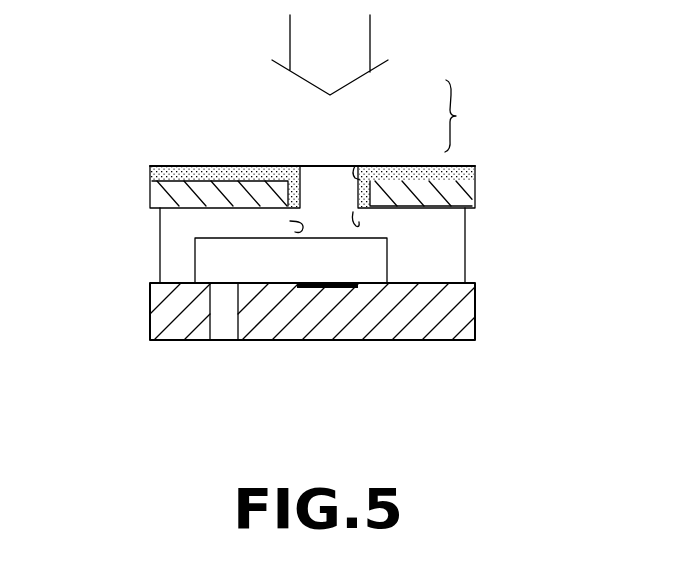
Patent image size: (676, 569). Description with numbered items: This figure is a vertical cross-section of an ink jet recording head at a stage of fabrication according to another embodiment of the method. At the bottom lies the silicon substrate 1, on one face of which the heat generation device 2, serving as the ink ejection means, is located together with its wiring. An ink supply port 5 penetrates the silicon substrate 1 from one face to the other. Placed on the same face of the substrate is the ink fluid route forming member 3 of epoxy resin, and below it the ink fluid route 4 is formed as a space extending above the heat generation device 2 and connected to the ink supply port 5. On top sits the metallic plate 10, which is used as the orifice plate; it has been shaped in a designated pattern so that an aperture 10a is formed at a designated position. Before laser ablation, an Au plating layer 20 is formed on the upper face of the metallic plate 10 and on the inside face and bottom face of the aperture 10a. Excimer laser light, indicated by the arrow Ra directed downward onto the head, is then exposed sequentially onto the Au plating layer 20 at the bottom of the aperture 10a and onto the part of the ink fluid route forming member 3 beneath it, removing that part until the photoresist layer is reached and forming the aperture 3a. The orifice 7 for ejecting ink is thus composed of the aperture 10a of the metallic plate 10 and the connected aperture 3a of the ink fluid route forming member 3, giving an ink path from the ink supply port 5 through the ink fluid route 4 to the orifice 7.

The silicon substrate 1 is at (427, 322).
The heat generation device 2 is at (322, 288).
The ink fluid route forming member 3 is at (462, 237).
The aperture 3a is at (290, 221).
The ink fluid route 4 is at (375, 263).
The ink supply port 5 is at (227, 327).
The orifice 7 is at (462, 116).
The metallic plate 10 is at (475, 193).
The aperture 10a is at (347, 166).
The Au plating layer 20 is at (463, 167).
The pressing force Ra is at (362, 44).